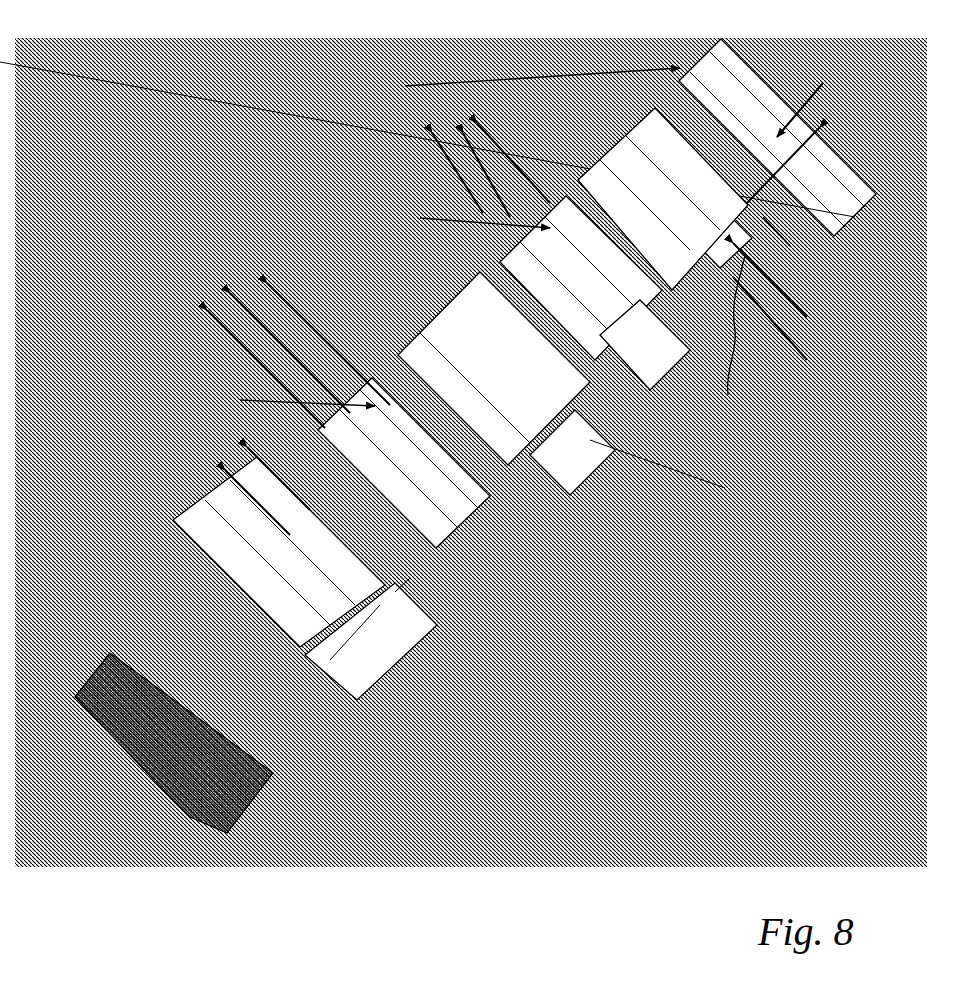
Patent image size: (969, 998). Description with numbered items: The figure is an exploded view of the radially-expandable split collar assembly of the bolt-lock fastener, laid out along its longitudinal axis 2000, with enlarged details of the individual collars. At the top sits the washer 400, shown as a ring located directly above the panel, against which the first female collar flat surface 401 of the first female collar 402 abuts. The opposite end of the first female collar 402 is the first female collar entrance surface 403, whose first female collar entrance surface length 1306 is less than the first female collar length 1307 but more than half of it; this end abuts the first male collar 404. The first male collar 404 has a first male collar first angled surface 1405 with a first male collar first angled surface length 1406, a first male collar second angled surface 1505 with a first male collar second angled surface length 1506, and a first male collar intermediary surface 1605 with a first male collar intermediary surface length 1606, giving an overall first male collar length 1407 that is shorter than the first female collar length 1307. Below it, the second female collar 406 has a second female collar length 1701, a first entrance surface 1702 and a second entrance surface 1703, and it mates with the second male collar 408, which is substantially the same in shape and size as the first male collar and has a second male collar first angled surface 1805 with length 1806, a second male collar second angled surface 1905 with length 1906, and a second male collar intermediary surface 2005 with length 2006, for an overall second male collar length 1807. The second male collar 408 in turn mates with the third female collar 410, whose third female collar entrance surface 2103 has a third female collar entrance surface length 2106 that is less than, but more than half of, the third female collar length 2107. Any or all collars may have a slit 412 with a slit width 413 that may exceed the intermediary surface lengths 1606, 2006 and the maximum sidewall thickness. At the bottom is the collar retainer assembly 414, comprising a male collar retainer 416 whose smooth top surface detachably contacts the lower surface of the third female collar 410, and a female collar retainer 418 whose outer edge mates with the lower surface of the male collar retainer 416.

The washer 400 is at (509, 85).
The first female collar flat surface 401 is at (785, 225).
The first female collar 402 is at (810, 315).
The first female collar entrance surface 403 is at (715, 262).
The first male collar 404 is at (455, 221).
The second female collar 406 is at (687, 472).
The second male collar 408 is at (280, 393).
The third female collar 410 is at (400, 630).
The slit 412 is at (749, 343).
The slit width 413 is at (830, 145).
The collar retainer assembly 414 is at (330, 767).
The male collar retainer 416 is at (210, 588).
The female collar retainer 418 is at (250, 802).
The first female collar entrance surface length 1306 is at (787, 322).
The first female collar length 1307 is at (690, 160).
The first male collar first angled surface 1405 is at (650, 395).
The first male collar first angled surface length 1406 is at (470, 140).
The first male collar length 1407 is at (598, 254).
The first male collar second angled surface 1505 is at (675, 427).
The first male collar second angled surface length 1506 is at (405, 190).
The first male collar intermediary surface 1605 is at (665, 412).
The first male collar intermediary surface length 1606 is at (418, 150).
The second female collar length 1701 is at (445, 265).
The first entrance surface 1702 is at (560, 440).
The second entrance surface 1703 is at (545, 457).
The second male collar first angled surface 1805 is at (500, 492).
The second male collar first angled surface length 1806 is at (270, 300).
The second male collar length 1807 is at (418, 440).
The second male collar second angled surface 1905 is at (470, 528).
The second male collar second angled surface length 1906 is at (197, 345).
The longitudinal axis 2000 is at (825, 90).
The second male collar intermediary surface 2005 is at (480, 510).
The second male collar intermediary surface length 2006 is at (215, 310).
The third female collar entrance surface 2103 is at (395, 592).
The third female collar entrance surface length 2106 is at (240, 452).
The third female collar length 2107 is at (212, 480).